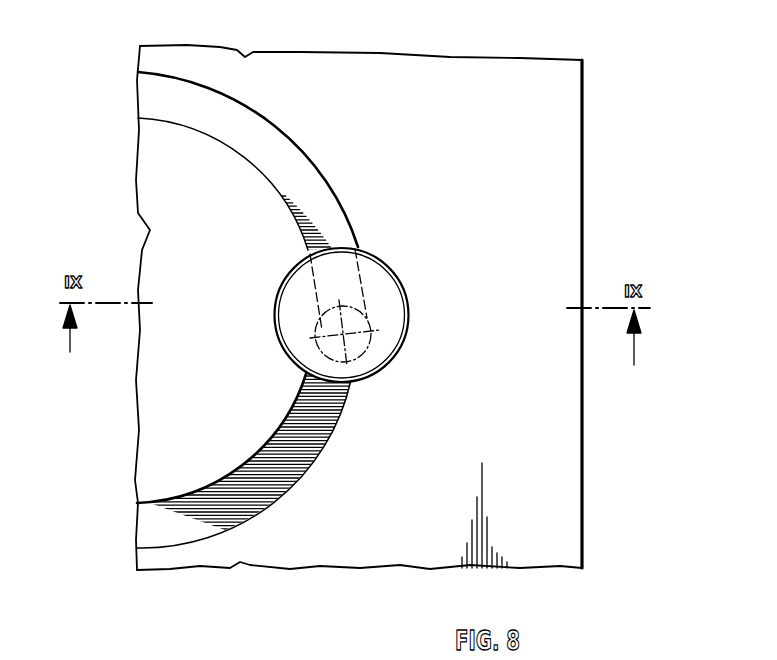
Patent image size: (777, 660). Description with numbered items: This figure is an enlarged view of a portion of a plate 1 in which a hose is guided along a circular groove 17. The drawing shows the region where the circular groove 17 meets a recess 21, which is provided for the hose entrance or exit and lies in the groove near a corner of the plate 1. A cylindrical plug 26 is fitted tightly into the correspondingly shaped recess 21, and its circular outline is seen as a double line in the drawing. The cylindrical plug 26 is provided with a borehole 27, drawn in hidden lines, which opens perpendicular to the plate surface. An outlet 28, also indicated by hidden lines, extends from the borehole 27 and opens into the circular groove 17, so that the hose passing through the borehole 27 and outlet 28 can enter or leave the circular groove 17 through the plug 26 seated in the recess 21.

The plate 1 is at (570, 112).
The circular groove 17 is at (219, 98).
The recess 21 is at (408, 292).
The cylindrical plug 26 is at (393, 328).
The borehole 27 is at (360, 348).
The outlet 28 is at (360, 280).